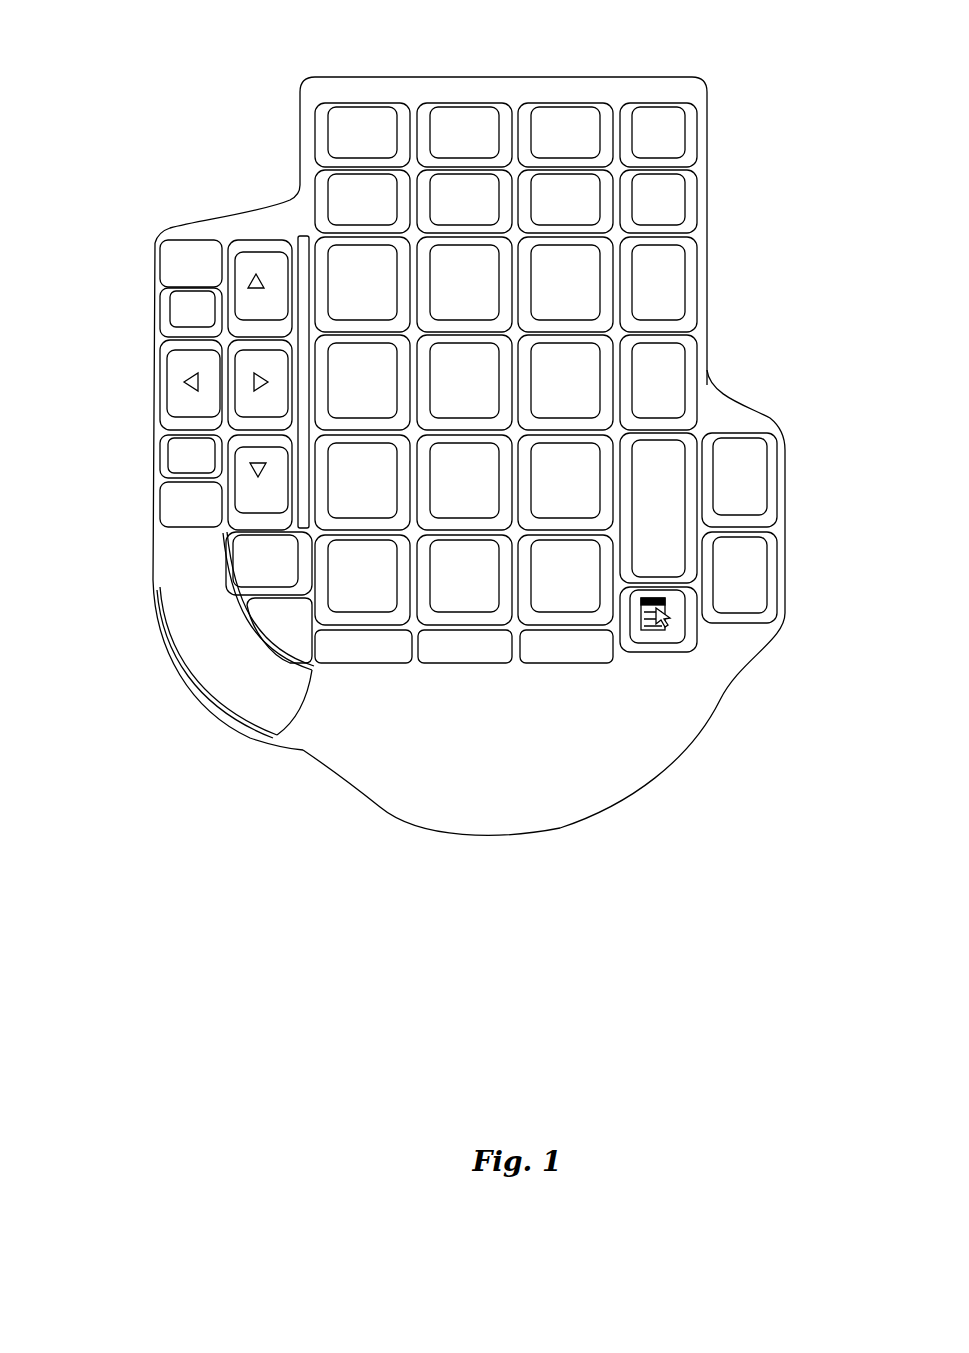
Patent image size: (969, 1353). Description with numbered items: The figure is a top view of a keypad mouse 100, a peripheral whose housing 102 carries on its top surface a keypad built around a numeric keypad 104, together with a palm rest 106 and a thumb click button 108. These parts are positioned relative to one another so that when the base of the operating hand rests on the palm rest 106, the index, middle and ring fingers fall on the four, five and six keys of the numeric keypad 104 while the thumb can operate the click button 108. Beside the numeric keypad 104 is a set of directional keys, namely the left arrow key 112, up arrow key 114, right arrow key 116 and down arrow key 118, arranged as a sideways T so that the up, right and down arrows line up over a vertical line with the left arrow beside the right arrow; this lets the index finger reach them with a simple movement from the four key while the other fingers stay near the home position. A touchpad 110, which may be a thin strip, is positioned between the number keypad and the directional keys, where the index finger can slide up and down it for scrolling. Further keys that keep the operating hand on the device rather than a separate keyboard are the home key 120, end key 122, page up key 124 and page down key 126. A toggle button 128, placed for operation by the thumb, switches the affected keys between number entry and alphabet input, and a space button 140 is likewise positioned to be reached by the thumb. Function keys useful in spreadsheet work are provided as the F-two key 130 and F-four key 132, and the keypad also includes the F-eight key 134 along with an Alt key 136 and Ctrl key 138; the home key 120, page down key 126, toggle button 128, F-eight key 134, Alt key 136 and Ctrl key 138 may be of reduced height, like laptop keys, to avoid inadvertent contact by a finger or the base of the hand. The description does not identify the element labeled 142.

The keypad mouse 100 is at (285, 111).
The housing 102 is at (722, 417).
The numeric keypad 104 is at (580, 287).
The palm rest 106 is at (550, 740).
The thumb click button 108 is at (210, 663).
The touchpad 110 is at (255, 262).
The left arrow key 112 is at (177, 372).
The up arrow key 114 is at (303, 250).
The right arrow key 116 is at (247, 405).
The down arrow key 118 is at (253, 502).
The home key 120 is at (170, 270).
The end key 122 is at (175, 308).
The page up key 124 is at (177, 457).
The page down key 126 is at (167, 518).
The toggle button 128 is at (293, 645).
The F2 key 130 is at (355, 117).
The F4 key 132 is at (660, 117).
The F8 key 134 is at (362, 655).
The Alt key 136 is at (455, 657).
The Ctrl key 138 is at (528, 655).
The space button 140 is at (672, 633).
The Space key 142 is at (253, 577).